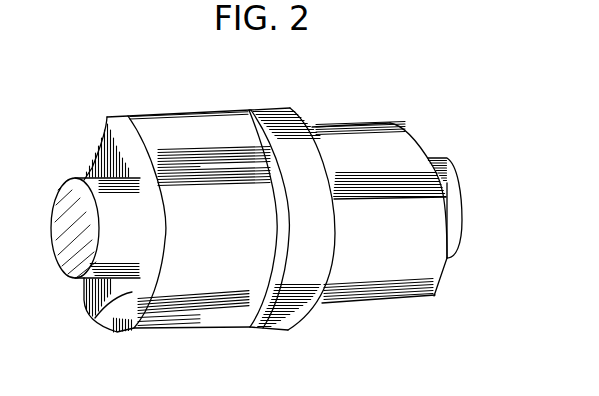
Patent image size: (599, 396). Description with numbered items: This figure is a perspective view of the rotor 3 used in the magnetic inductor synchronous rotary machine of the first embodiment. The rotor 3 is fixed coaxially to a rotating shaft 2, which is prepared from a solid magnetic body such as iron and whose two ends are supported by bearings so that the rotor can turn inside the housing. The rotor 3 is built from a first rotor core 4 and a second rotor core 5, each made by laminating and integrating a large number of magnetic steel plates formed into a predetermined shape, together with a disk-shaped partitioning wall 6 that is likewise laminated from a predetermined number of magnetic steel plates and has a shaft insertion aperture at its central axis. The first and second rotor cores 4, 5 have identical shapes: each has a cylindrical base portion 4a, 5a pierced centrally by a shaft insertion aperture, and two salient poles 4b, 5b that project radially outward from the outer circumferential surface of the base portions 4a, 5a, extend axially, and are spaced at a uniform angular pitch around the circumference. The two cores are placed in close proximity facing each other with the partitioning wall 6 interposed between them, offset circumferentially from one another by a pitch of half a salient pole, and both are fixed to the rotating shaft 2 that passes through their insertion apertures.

The rotor 3 is at (65, 90).
The first rotor core 4 is at (176, 119).
The base portion 4a is at (100, 296).
The salient pole 4b is at (119, 333).
The partitioning wall 6 is at (263, 120).
The second rotor core 5 is at (348, 128).
The base portion 5a is at (407, 143).
The salient pole 5b is at (433, 272).
The rotating shaft 2 is at (450, 175).